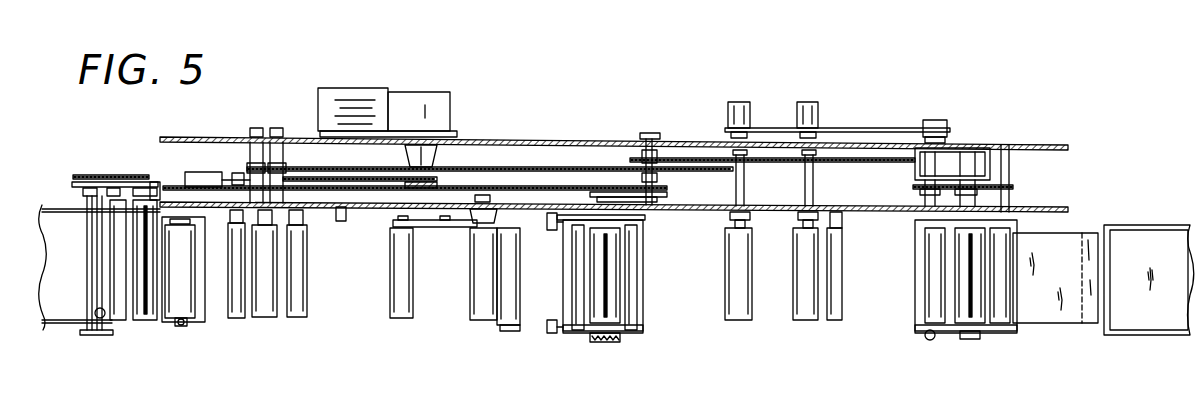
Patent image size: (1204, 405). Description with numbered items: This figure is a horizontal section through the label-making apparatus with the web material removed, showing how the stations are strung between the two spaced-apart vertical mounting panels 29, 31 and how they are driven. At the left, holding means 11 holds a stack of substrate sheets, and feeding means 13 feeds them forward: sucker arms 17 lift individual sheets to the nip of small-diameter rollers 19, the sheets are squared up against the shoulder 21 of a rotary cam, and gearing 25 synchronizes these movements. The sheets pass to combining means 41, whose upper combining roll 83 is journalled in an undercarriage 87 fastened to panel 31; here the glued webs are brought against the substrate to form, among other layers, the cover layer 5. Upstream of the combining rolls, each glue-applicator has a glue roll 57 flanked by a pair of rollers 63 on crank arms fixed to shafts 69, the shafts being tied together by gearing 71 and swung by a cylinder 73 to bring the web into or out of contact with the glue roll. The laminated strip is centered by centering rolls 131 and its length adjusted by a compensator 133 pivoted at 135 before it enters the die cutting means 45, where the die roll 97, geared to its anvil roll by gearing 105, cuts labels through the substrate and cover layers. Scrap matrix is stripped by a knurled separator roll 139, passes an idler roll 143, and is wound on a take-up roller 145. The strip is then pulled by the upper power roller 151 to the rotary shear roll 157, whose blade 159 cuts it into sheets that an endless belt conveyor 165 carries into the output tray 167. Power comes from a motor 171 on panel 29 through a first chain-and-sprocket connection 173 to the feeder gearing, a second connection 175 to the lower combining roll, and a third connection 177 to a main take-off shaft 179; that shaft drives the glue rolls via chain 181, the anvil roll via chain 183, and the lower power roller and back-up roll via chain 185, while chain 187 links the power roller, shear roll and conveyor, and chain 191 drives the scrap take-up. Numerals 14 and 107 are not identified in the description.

The cover layer 5 is at (46, 222).
The holding means 11 is at (46, 326).
The feeding means 13 is at (231, 249).
The roller 14 is at (800, 315).
The sucker arms 17 is at (95, 310).
The rollers 19 is at (125, 322).
The shoulder 21 is at (143, 322).
The gearing 25 is at (115, 174).
The mounting panel 29 is at (1035, 146).
The mounting panel 31 is at (1035, 208).
The combining means 41 is at (182, 332).
The die cutting means 45 is at (602, 309).
The glue roll 57 is at (268, 322).
The rollers 63 is at (228, 322).
The shafts 69 is at (253, 147).
The gearing 71 is at (287, 180).
The cylinder 73 is at (192, 172).
The upper combining roll 83 is at (178, 322).
The undercarriage 87 is at (189, 307).
The die roll 97 is at (612, 306).
The gearing 105 is at (615, 343).
The bracket 107 is at (557, 340).
The centering rolls 131 is at (520, 320).
The compensator 133 is at (413, 282).
The pivot 135 is at (508, 205).
The knurled separator roll 139 is at (840, 300).
The idler roll 143 is at (813, 318).
The take-up roller 145 is at (735, 305).
The upper power roller 151 is at (966, 300).
The rotary shear roll 157 is at (962, 310).
The blade 159 is at (985, 290).
The endless belt conveyor 165 is at (1065, 240).
The output tray 167 is at (1170, 225).
The motor 171 is at (362, 88).
The first chain-and-sprocket connection 173 is at (122, 174).
The second chain-and-sprocket connection 175 is at (339, 208).
The third chain-and-sprocket connection 177 is at (572, 186).
The main take-off shaft 179 is at (650, 133).
The chain 181 is at (460, 175).
The chain 183 is at (676, 208).
The chain 185 is at (872, 166).
The chain 187 is at (1008, 190).
The chain 191 is at (870, 128).